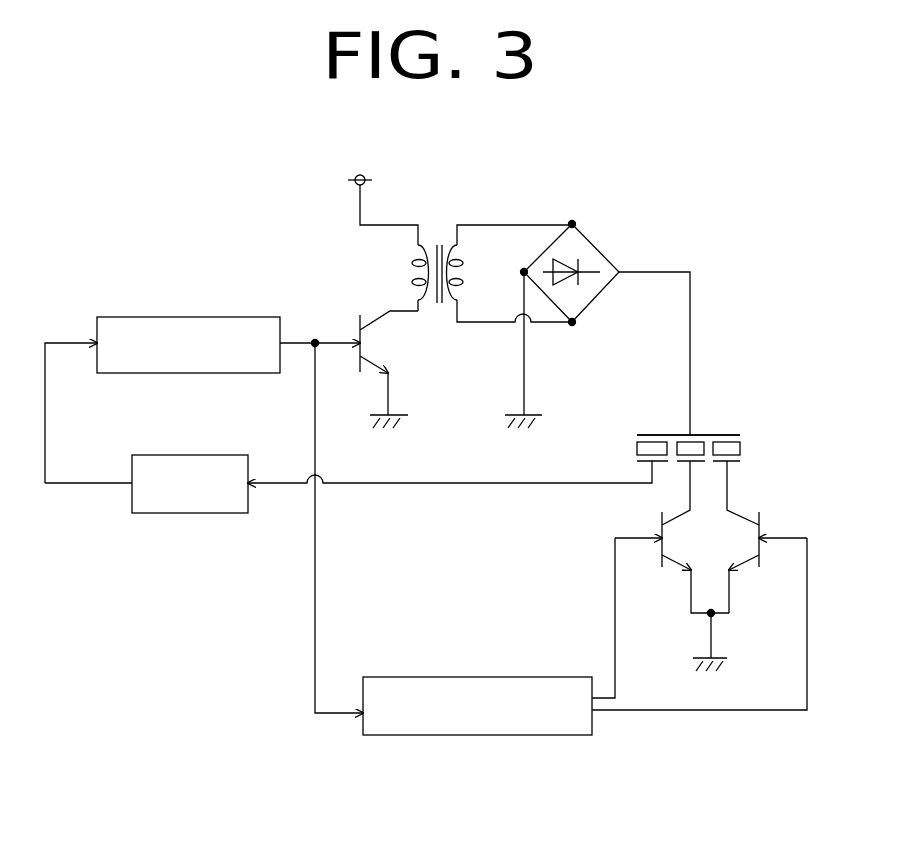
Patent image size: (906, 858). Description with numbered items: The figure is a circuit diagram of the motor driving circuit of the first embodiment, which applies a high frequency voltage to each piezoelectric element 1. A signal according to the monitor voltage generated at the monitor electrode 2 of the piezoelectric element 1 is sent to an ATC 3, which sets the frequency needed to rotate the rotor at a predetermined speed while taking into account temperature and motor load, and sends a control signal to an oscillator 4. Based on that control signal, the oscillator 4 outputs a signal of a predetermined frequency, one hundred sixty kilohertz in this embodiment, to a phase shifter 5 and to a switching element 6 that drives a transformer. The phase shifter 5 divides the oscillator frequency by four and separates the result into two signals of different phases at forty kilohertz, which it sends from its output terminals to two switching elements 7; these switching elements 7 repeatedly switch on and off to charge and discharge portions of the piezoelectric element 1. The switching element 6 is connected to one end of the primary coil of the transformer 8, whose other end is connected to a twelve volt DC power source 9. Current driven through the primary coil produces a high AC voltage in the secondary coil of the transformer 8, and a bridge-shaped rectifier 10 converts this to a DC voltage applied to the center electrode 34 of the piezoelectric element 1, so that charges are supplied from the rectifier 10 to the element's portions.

The piezoelectric element 1 is at (758, 448).
The monitor electrode 2 is at (641, 463).
The ATC 3 is at (227, 455).
The oscillator 4 is at (210, 317).
The phase shifter 5 is at (443, 677).
The switching element 6 is at (358, 350).
The switching elements 7 is at (661, 557).
The transformer 8 is at (438, 240).
The DC power source 9 is at (355, 183).
The bridge-shaped rectifier 10 is at (593, 240).
The center electrode 34 is at (704, 434).